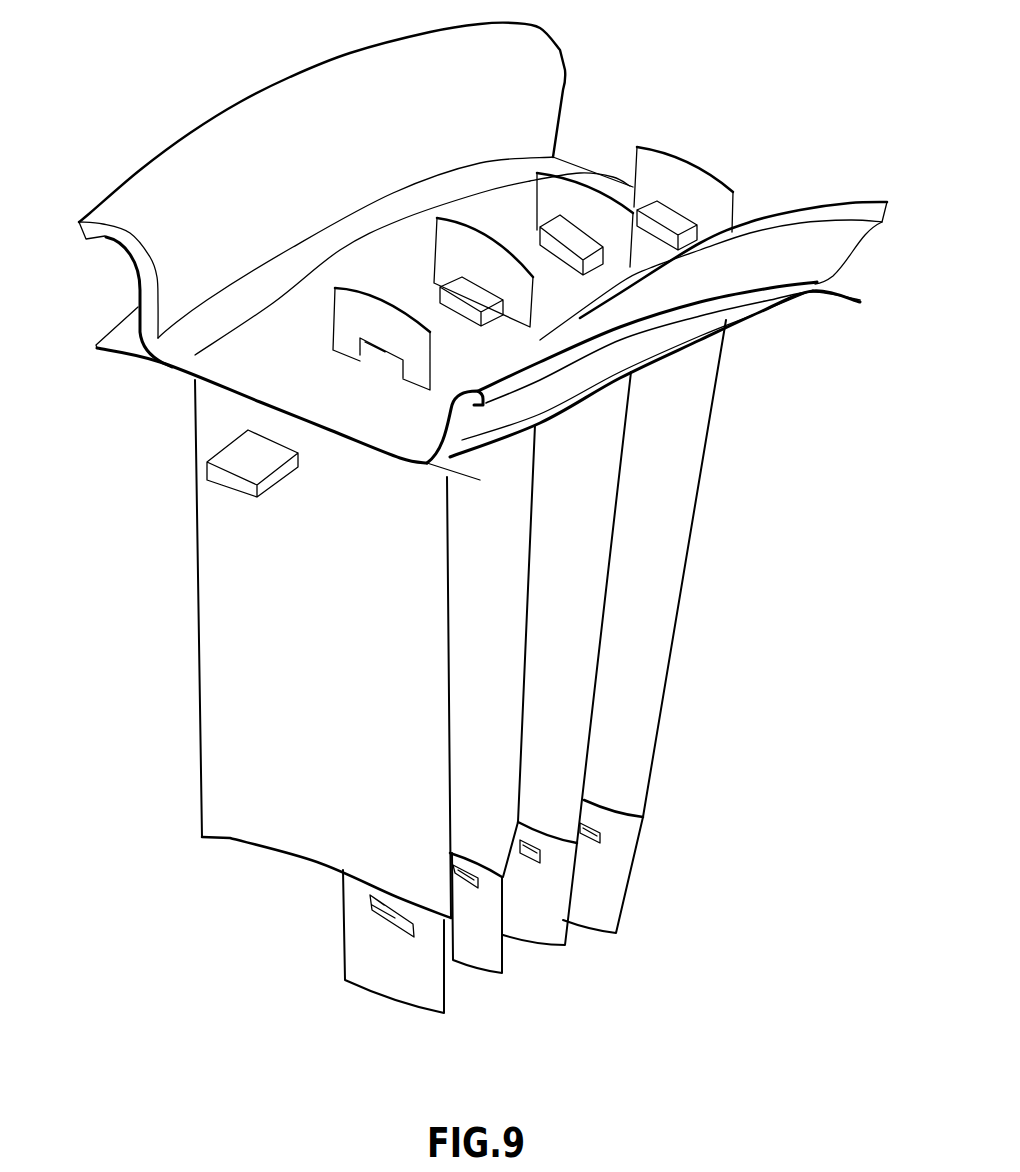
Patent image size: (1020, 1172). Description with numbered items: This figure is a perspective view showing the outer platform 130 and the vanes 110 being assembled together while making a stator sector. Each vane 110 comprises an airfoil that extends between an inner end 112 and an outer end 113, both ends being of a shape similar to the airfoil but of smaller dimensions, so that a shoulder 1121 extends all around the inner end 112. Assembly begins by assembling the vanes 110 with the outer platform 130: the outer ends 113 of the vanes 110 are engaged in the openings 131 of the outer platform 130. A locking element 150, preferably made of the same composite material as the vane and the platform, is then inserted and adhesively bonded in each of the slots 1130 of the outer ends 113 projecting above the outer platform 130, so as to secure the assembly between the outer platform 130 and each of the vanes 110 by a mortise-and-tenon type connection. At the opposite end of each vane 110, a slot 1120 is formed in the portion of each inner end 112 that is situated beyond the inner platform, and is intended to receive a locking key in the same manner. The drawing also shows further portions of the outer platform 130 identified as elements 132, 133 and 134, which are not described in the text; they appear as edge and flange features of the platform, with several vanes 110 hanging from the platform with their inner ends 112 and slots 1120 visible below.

The vane 110 is at (455, 778).
The inner end 112 is at (428, 992).
The outer end 113 is at (335, 300).
The outer platform 130 is at (183, 374).
The openings 131 is at (396, 400).
The front flange lip 132 is at (112, 352).
The outer shroud flange 133 is at (104, 234).
The rear rail hook 134 is at (476, 407).
The locking element 150 is at (243, 485).
The slot 1120 is at (392, 912).
The shoulder 1121 is at (228, 843).
The slot 1130 is at (372, 360).